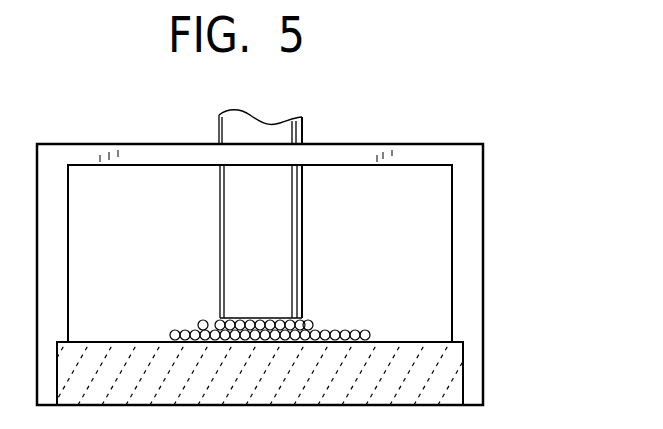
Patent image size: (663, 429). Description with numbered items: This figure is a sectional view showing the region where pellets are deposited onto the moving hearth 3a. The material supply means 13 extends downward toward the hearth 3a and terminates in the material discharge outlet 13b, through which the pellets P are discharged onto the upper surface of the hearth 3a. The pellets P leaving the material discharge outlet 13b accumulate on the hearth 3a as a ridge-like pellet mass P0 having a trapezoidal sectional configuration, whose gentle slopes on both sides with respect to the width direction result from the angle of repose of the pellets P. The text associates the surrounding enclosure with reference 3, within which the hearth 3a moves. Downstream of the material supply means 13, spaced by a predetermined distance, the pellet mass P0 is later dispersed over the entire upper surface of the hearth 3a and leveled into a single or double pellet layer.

The chamber 3 is at (490, 210).
The hearth 3a is at (93, 341).
The material supply means 13 is at (308, 129).
The material discharge outlet 13b is at (268, 318).
The pellets P is at (178, 330).
The ridge-like pellet mass P0 is at (199, 312).